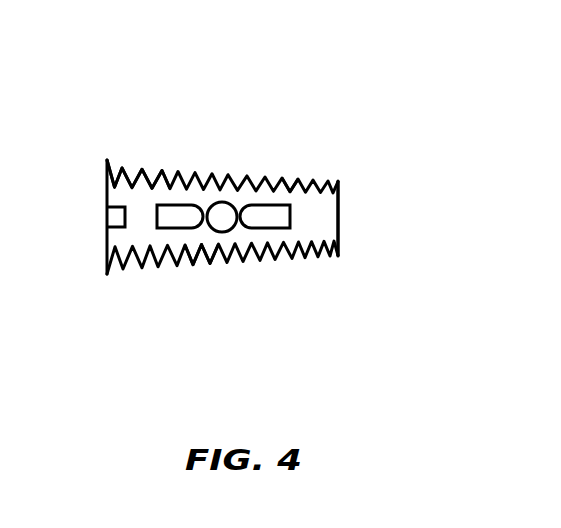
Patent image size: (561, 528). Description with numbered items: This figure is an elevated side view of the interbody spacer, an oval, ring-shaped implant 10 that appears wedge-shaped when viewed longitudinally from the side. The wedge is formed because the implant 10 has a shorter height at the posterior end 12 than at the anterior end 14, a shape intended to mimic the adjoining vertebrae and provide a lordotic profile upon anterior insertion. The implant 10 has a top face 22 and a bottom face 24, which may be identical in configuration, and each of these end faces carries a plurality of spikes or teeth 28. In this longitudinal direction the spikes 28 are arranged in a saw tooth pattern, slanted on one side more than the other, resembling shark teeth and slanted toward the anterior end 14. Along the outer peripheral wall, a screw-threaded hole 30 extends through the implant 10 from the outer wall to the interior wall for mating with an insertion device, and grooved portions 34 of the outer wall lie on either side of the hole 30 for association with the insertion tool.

The implant 10 is at (263, 128).
The posterior end 12 is at (341, 217).
The anterior end 14 is at (104, 225).
The top face 22 is at (294, 185).
The bottom face 24 is at (200, 256).
The spikes or teeth 28 is at (160, 168).
The holes or apertures 30 is at (223, 218).
The grooved portions 34 is at (183, 218).